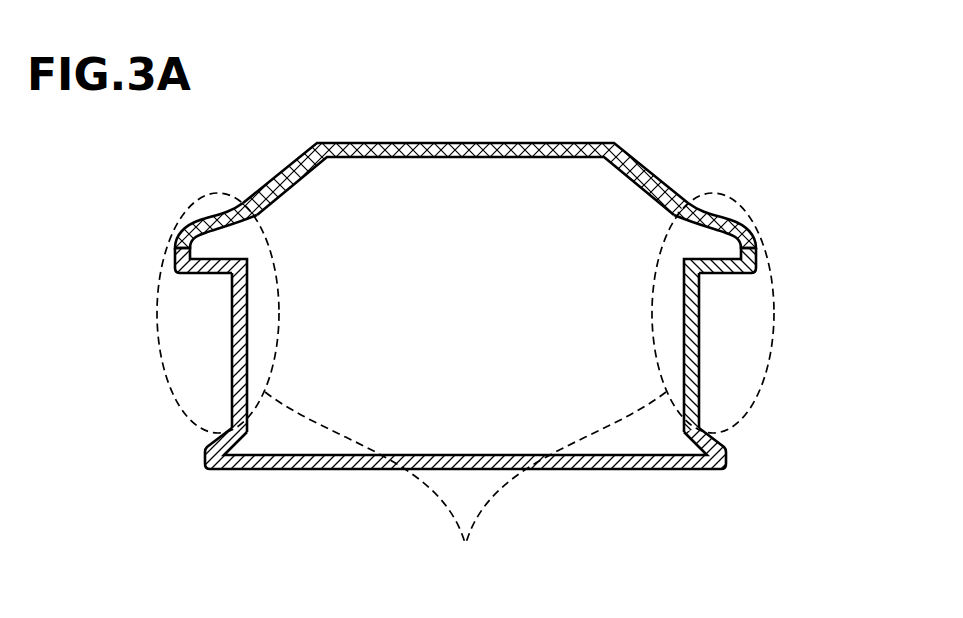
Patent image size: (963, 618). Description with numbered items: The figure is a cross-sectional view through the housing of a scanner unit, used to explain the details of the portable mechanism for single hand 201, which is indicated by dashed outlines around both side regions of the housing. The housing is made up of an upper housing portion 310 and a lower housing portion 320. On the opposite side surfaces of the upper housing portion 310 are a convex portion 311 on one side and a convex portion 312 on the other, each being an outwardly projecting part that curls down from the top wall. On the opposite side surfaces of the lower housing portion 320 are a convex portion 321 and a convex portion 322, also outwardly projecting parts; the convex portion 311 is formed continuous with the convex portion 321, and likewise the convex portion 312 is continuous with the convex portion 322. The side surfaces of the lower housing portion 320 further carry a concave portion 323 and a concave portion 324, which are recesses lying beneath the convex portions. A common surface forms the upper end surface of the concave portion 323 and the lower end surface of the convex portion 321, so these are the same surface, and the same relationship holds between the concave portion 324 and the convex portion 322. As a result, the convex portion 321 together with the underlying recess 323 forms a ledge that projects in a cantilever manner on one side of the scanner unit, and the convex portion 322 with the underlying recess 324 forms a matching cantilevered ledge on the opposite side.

The portable mechanism for single hand 201 is at (465, 548).
The upper housing portion 310 is at (462, 143).
The convex portion 311 is at (178, 230).
The convex portion 312 is at (752, 227).
The lower housing portion 320 is at (205, 453).
The convex portion 321 is at (173, 260).
The convex portion 322 is at (757, 260).
The concave portion 323 is at (232, 343).
The concave portion 324 is at (700, 345).